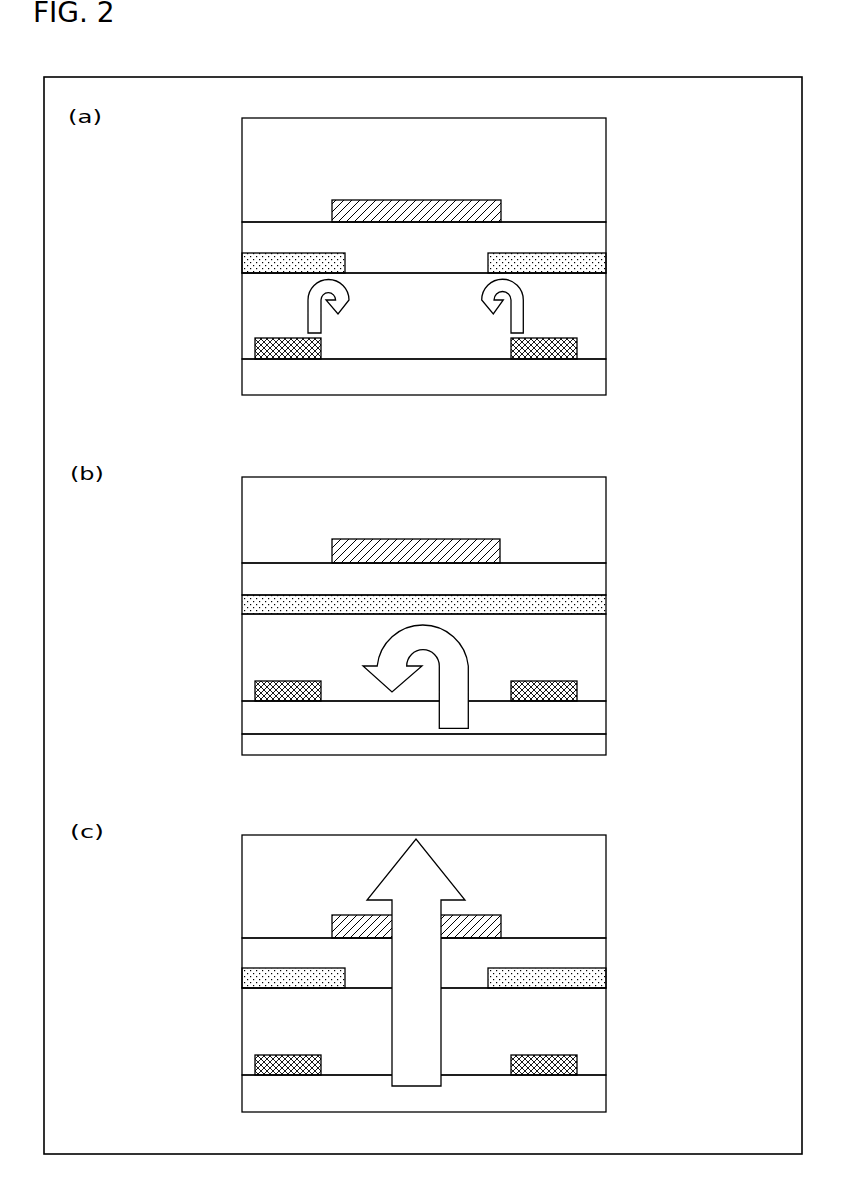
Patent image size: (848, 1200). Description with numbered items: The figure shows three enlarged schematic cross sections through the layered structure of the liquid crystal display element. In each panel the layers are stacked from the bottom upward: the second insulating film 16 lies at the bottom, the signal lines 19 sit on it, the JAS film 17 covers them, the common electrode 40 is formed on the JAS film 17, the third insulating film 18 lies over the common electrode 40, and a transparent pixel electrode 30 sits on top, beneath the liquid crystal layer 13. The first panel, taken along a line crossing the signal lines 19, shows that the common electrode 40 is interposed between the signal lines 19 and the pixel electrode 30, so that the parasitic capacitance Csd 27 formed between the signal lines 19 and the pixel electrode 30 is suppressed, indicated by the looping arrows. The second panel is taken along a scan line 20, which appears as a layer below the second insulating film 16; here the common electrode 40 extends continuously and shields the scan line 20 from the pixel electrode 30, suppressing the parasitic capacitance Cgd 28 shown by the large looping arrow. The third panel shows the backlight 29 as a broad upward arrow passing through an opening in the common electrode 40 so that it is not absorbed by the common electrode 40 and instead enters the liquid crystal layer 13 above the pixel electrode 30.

The liquid crystal layer 13 is at (606, 170).
The third insulating film 18 is at (606, 236).
The common electrode 40 is at (606, 263).
The JAS film 17 is at (606, 314).
The second insulating film 16 is at (606, 378).
The scan line 20 is at (606, 744).
The pixel electrode 30 is at (418, 204).
The signal line 19 is at (256, 350).
The parasitic capacitance Csd 27 is at (524, 313).
The parasitic capacitance Cgd 28 is at (468, 667).
The backlight 29 is at (441, 1027).